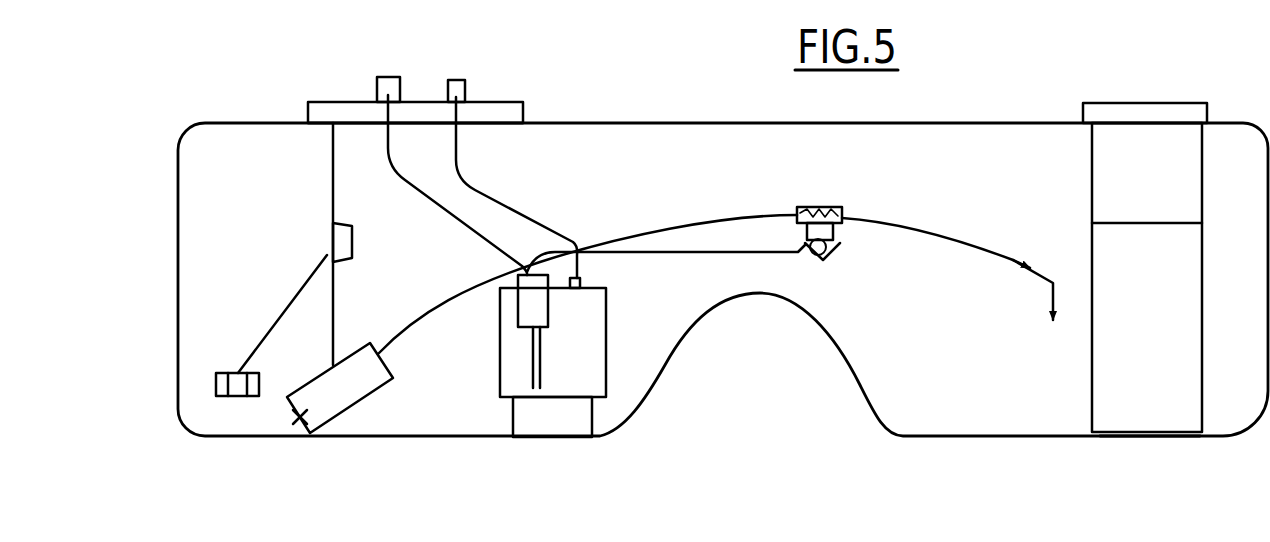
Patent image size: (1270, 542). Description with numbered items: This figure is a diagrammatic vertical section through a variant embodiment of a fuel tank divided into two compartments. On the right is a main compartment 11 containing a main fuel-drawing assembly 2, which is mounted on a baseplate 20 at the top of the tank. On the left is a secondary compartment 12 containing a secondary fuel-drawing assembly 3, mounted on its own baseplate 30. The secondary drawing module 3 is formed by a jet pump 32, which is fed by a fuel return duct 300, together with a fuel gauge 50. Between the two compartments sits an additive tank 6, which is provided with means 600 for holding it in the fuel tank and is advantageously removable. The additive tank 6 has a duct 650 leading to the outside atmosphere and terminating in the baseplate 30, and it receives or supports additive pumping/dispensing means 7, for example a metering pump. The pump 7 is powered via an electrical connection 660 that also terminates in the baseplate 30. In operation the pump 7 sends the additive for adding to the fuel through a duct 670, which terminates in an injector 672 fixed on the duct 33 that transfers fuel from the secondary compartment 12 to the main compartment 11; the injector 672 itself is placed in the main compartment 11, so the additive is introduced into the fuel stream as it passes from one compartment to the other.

The main fuel-drawing assembly 2 is at (1080, 387).
The secondary fuel-drawing assembly 3 is at (293, 427).
The additive tank 6 is at (593, 376).
The additive pumping/dispensing means 7 is at (518, 312).
The main compartment 11 is at (1130, 437).
The secondary compartment 12 is at (225, 440).
The baseplate 20 is at (1167, 102).
The baseplate 30 is at (500, 110).
The jet pump 32 is at (351, 385).
The duct 33 is at (848, 230).
The fuel gauge 50 is at (217, 384).
The fuel return duct 300 is at (329, 97).
The holding means 600 is at (560, 420).
The duct 650 is at (499, 188).
The electrical connection 660 is at (397, 160).
The duct 670 is at (735, 254).
The injector 672 is at (833, 265).